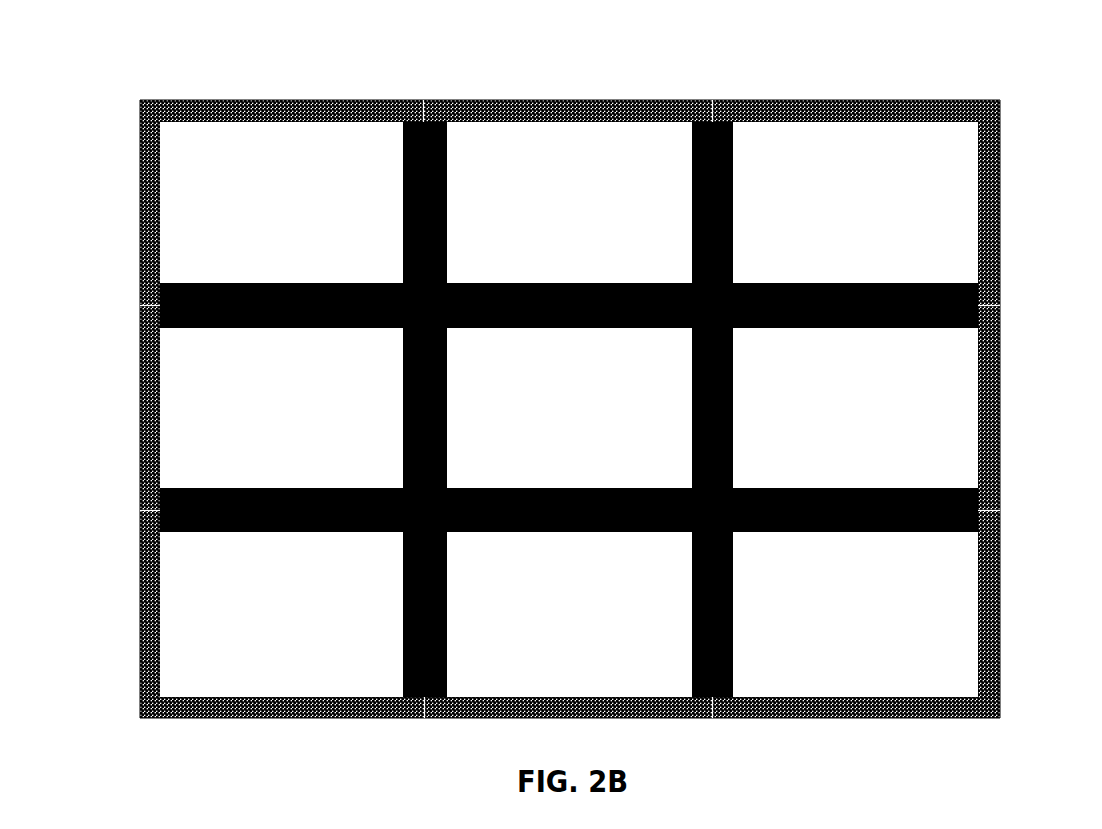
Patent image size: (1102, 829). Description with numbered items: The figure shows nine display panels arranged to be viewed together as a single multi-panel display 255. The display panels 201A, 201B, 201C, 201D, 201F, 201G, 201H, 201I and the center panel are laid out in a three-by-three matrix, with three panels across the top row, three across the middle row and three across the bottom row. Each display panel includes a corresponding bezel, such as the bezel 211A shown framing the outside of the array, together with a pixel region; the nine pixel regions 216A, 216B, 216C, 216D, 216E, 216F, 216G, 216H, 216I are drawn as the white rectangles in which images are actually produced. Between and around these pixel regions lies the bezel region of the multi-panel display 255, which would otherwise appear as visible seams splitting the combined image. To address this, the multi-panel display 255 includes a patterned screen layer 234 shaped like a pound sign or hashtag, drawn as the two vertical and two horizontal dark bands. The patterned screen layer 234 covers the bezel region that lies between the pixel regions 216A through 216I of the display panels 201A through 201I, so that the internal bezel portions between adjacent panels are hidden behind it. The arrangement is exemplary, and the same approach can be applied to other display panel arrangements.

The multi-panel display 255 is at (562, 399).
The bezel 211A is at (333, 102).
The patterned screen layer 234 is at (463, 488).
The display panel 201A is at (224, 202).
The display panel 201B is at (569, 163).
The display panel 201C is at (902, 202).
The display panel 201D is at (224, 408).
The display panel 201F is at (906, 408).
The display panel 201G is at (226, 614).
The display panel 201H is at (590, 656).
The display panel 201I is at (905, 614).
The pixel region 216A is at (297, 218).
The pixel region 216B is at (587, 218).
The pixel region 216C is at (873, 218).
The pixel region 216D is at (299, 420).
The pixel region 216E is at (587, 420).
The pixel region 216F is at (873, 420).
The pixel region 216G is at (299, 630).
The pixel region 216H is at (587, 630).
The pixel region 216I is at (871, 630).